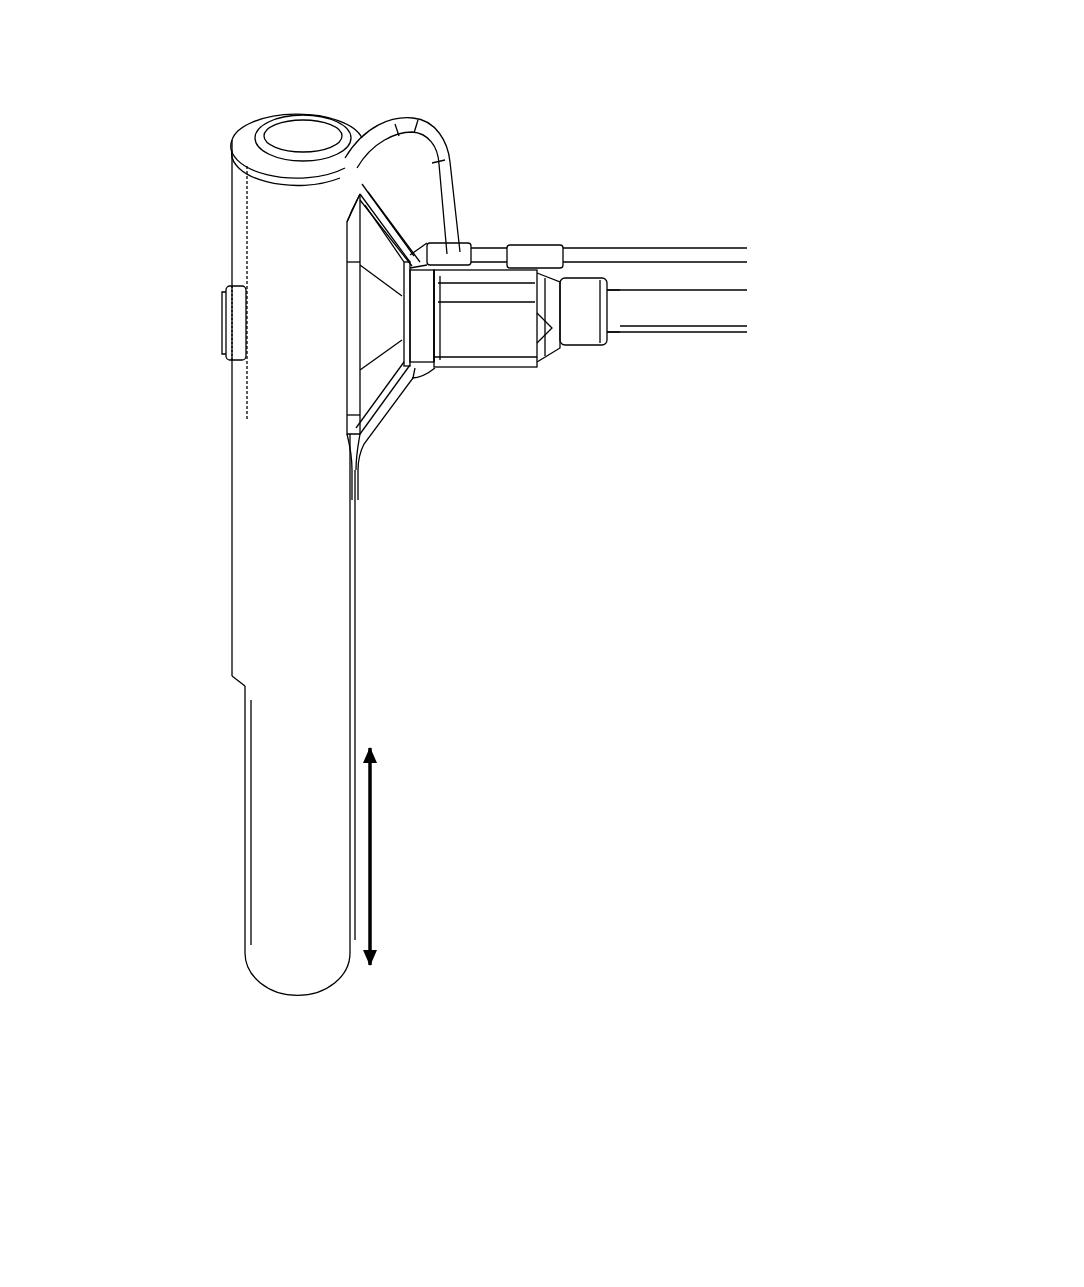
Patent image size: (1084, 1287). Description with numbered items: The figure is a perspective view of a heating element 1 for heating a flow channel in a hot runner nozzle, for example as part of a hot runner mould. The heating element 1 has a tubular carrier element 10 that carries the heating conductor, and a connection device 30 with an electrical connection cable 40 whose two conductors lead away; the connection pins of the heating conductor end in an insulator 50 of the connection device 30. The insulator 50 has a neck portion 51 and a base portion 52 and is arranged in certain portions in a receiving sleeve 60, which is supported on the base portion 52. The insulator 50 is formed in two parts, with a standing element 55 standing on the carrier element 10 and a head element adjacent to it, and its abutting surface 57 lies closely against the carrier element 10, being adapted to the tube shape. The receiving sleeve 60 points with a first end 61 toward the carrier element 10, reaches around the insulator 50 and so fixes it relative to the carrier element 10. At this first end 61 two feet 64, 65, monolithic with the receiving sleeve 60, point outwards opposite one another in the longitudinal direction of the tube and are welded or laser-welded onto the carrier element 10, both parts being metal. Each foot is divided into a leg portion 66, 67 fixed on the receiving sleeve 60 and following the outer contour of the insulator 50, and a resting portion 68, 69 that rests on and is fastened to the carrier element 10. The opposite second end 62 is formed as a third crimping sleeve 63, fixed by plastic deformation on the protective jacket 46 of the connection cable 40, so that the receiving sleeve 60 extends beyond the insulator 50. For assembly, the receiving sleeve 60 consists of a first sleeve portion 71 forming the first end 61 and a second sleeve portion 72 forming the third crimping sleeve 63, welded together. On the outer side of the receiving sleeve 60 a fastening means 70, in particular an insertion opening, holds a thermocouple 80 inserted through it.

The heating element 1 is at (138, 93).
The tubular carrier element 10 is at (285, 584).
The connection device 30 is at (375, 367).
The electrical connection cable 40 is at (680, 318).
The protective jacket 46 is at (737, 333).
The insulator 50 is at (378, 300).
The neck portion 51 is at (427, 318).
The base portion 52 is at (380, 258).
The standing element 55 is at (357, 328).
The abutting surface 57 is at (345, 352).
The receiving sleeve 60 is at (520, 300).
The first end 61 is at (433, 338).
The second end 62 is at (615, 316).
The third crimping sleeve 63 is at (594, 312).
The foot 64 is at (383, 218).
The foot 65 is at (383, 408).
The leg portion 66 is at (407, 232).
The leg portion 67 is at (405, 398).
The resting portion 68 is at (361, 192).
The resting portion 69 is at (357, 472).
The fastening means 70 is at (518, 250).
The first sleeve portion 71 is at (478, 330).
The second sleeve portion 72 is at (576, 312).
The thermocouple 80 is at (718, 250).